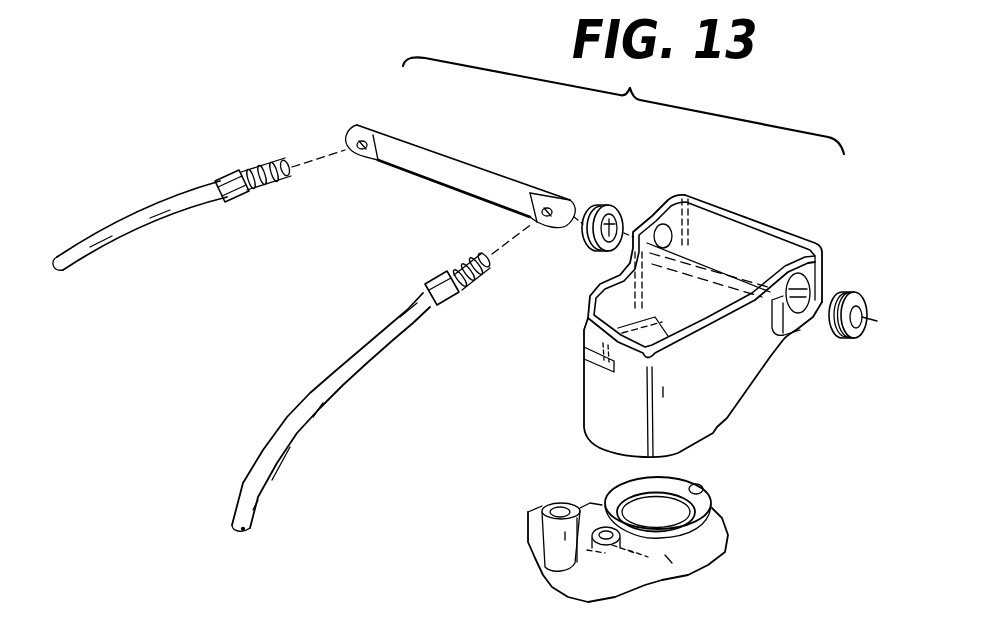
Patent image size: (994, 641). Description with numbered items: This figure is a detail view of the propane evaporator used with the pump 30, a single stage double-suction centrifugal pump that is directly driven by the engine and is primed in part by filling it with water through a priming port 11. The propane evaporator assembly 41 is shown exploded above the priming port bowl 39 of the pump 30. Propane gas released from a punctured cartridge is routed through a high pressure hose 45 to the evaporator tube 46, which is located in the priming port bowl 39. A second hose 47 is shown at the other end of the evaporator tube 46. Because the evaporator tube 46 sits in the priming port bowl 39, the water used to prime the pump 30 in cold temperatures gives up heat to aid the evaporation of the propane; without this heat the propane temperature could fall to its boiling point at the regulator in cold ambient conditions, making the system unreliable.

The priming port 11 is at (681, 512).
The pump 30 is at (659, 542).
The priming port bowl 39 is at (728, 387).
The hose and tube assembly 41 is at (778, 206).
The high pressure hose 45 is at (328, 384).
The evaporator tube 46 is at (481, 177).
The upper hose 47 is at (162, 207).